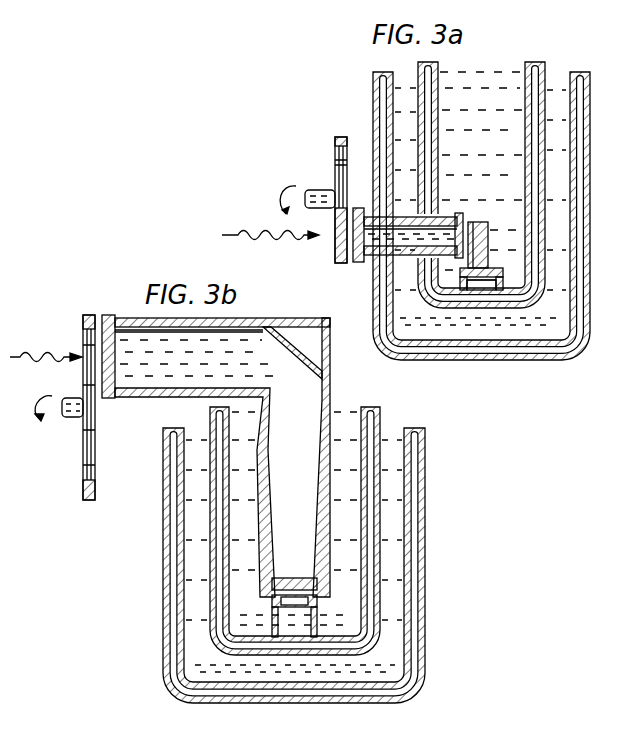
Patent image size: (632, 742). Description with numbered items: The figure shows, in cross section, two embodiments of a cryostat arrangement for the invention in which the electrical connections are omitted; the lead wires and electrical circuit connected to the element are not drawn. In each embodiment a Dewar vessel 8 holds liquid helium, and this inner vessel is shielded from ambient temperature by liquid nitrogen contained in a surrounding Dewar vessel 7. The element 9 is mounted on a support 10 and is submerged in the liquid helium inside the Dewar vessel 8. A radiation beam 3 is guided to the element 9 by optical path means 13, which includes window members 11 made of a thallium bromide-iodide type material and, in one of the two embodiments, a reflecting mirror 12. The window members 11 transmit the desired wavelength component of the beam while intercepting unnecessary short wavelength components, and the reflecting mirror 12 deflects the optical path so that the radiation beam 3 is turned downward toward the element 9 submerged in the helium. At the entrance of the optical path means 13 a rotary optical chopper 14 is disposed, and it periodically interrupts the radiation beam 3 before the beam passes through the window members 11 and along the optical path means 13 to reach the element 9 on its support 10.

In FIG. 3A, the radiation beam 3 is at (223, 234).
In FIG. 3B, the radiation beam 3 is at (13, 357).
In FIG. 3A, the Dewar vessel 7 is at (596, 118).
In FIG. 3B, the Dewar vessel 7 is at (403, 427).
In FIG. 3A, the Dewar vessel 8 is at (540, 62).
In FIG. 3B, the Dewar vessel 8 is at (372, 406).
In FIG. 3A, the element 9 is at (474, 222).
In FIG. 3B, the element 9 is at (317, 603).
In FIG. 3A, the support 10 is at (489, 228).
In FIG. 3B, the support 10 is at (272, 601).
In FIG. 3A, the window members 11 is at (358, 262).
In FIG. 3B, the window members 11 is at (107, 400).
In FIG. 3B, the reflecting mirror 12 is at (303, 354).
In FIG. 3A, the optical path means 13 is at (403, 240).
In FIG. 3B, the optical path means 13 is at (282, 373).
In FIG. 3A, the rotary optical chopper 14 is at (322, 187).
In FIG. 3B, the rotary optical chopper 14 is at (77, 423).